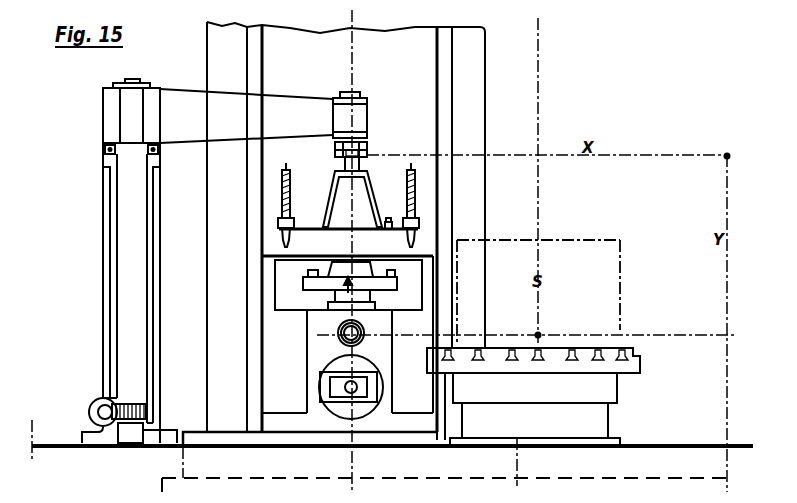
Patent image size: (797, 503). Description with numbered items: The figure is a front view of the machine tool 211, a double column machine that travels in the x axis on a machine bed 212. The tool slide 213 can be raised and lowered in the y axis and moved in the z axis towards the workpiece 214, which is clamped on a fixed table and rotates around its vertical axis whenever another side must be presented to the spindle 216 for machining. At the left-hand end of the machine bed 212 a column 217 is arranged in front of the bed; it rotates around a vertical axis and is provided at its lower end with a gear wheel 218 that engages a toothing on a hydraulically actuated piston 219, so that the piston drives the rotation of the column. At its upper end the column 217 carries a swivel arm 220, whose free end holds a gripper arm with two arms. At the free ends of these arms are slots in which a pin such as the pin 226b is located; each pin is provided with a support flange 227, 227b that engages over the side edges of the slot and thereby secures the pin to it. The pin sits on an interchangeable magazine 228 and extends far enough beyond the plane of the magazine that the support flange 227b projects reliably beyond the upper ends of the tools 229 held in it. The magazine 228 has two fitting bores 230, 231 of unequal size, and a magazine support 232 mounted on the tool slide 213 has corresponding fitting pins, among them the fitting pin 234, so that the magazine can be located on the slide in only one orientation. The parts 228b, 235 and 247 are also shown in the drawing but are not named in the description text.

The machine tool 211 is at (470, 135).
The machine bed 212 is at (653, 463).
The tool slide 213 is at (316, 346).
The workpiece 214 is at (603, 252).
The spindle 216 is at (359, 340).
The column 217 is at (128, 340).
The gear wheel 218 is at (150, 408).
The hydraulically actuated piston 219 is at (89, 409).
The swivel arm 220 is at (172, 104).
The pin 226b is at (360, 165).
The support flange 227 is at (417, 229).
The support flange 227b is at (357, 140).
The interchangeable magazine 228 is at (359, 328).
The bell housing 228b is at (339, 176).
The tools 229 is at (289, 200).
The fitting bore 230 is at (388, 221).
The fitting bore 231 is at (310, 231).
The magazine support 232 is at (382, 283).
The fitting pin 234 is at (308, 271).
The workpiece holder 235 is at (374, 268).
The base foot 247 is at (367, 298).